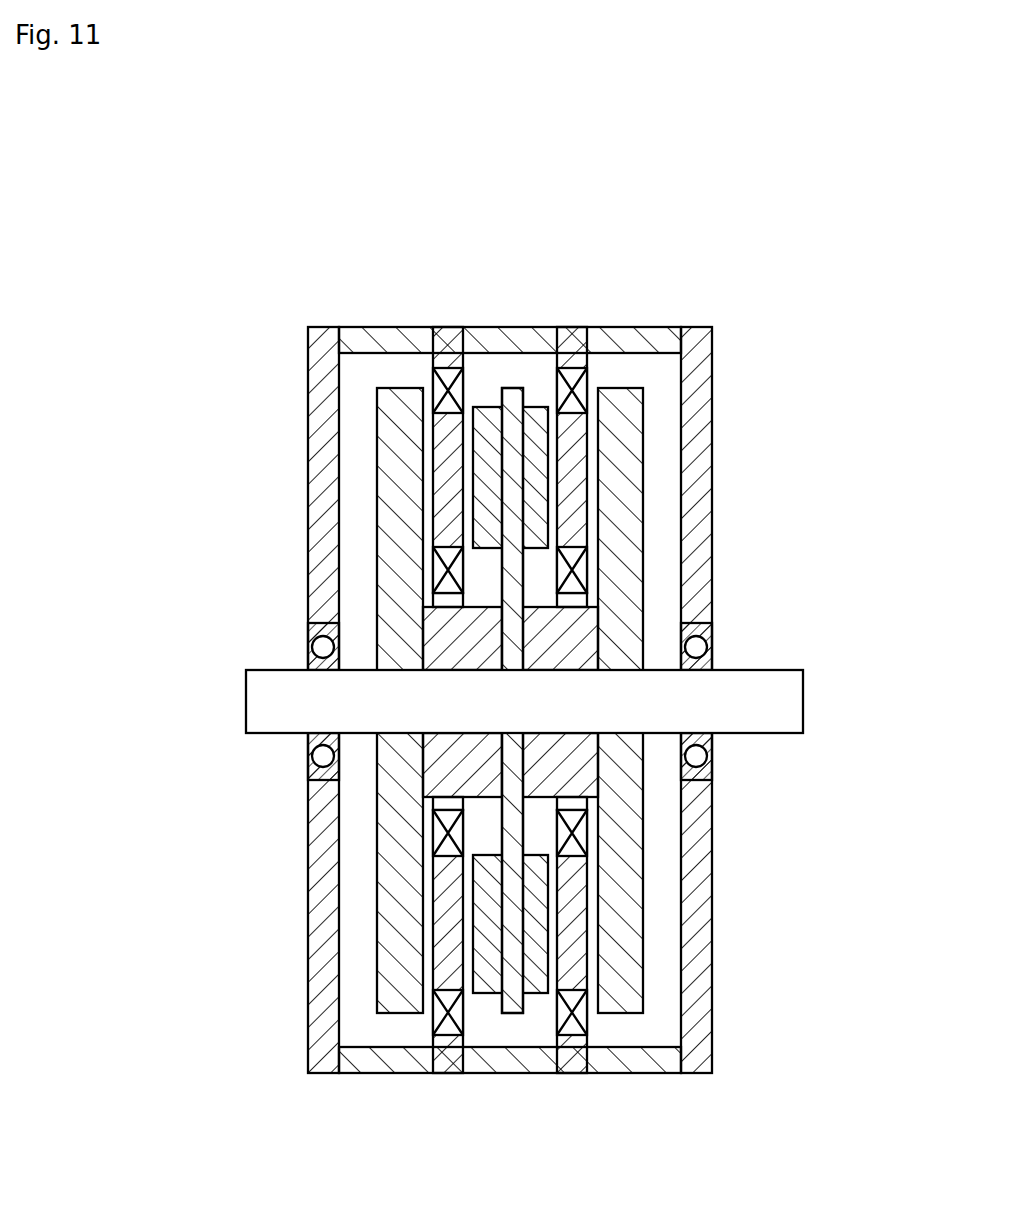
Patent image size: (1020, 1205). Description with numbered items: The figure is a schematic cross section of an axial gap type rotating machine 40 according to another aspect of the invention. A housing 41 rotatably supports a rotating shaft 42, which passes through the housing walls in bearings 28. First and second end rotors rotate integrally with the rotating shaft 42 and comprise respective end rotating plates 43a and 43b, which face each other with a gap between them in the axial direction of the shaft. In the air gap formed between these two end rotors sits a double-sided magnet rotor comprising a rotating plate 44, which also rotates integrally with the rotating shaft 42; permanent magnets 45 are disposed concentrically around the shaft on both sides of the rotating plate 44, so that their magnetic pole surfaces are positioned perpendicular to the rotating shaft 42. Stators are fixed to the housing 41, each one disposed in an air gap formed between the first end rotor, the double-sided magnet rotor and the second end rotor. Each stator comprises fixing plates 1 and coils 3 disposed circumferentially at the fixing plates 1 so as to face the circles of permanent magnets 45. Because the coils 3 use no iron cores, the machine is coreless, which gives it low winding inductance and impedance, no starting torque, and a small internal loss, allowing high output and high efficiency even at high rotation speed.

The fixing plate 1 is at (443, 1063).
The coil 3 is at (452, 377).
The bearing 28 is at (308, 635).
The axial gap type rotating machine 40 is at (696, 286).
The housing 41 is at (698, 480).
The rotating shaft 42 is at (796, 694).
The end rotating plate 43a is at (630, 527).
The end rotating plate 43b is at (402, 410).
The rotating plate 44 is at (508, 397).
The permanent magnet 45 is at (490, 458).